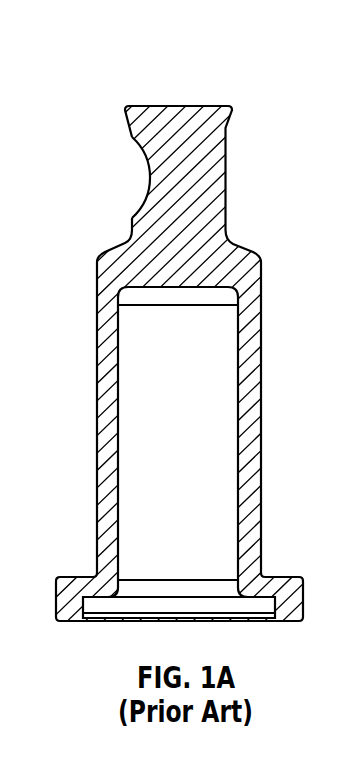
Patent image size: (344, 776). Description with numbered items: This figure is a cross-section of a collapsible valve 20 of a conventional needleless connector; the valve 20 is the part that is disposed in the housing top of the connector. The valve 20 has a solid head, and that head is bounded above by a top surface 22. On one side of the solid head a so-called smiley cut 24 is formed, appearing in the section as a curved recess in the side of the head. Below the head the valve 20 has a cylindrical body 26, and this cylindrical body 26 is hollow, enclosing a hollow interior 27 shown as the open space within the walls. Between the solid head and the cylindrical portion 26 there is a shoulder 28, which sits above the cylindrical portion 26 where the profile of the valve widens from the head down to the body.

The collapsible valve 20 is at (116, 47).
The top surface 22 is at (178, 106).
The smiley cut 24 is at (136, 180).
The shoulder 28 is at (97, 250).
The cylindrical body 26 is at (101, 347).
The hollow interior 27 is at (135, 460).